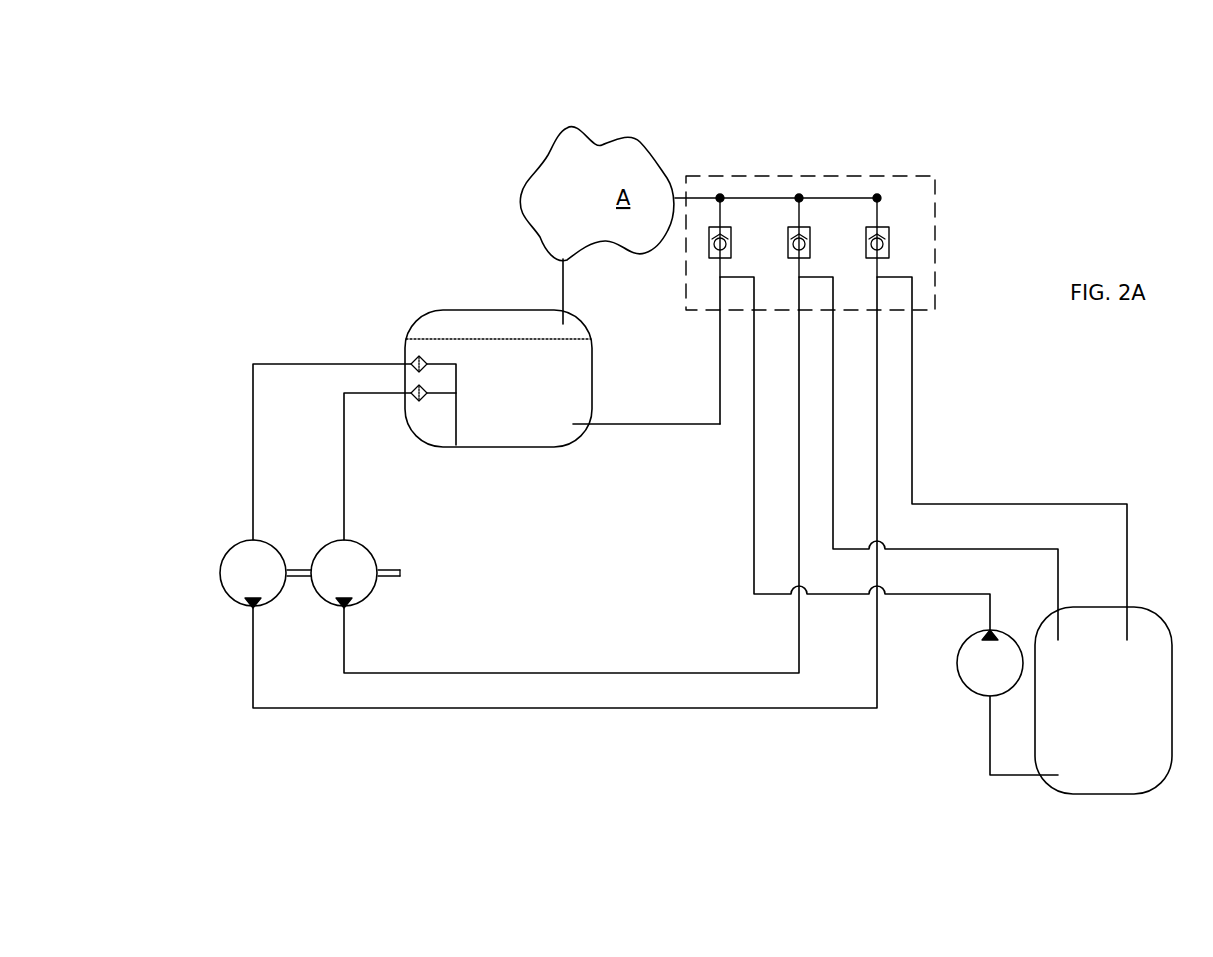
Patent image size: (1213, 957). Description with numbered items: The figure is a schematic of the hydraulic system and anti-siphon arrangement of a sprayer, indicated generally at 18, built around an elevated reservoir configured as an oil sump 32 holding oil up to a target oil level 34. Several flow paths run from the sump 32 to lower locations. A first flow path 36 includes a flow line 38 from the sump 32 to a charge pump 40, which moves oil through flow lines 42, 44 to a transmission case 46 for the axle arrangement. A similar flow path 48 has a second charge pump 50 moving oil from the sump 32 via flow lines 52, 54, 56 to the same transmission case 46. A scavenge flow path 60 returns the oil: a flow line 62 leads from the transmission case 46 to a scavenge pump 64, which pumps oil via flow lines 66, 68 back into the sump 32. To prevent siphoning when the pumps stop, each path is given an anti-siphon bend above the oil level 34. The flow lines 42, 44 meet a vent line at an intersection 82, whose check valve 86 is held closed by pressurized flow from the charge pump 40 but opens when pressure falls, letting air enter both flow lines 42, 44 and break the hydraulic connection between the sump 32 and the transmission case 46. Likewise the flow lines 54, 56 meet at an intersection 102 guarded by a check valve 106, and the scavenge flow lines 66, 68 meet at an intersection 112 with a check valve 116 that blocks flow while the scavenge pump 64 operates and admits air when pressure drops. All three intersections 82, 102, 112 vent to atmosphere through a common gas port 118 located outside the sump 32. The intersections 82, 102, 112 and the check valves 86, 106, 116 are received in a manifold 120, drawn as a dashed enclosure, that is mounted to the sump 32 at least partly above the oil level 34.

The hydraulic system 18 is at (251, 217).
The oil sump 32 is at (498, 378).
The target oil level 34 is at (497, 339).
The flow path 36 is at (360, 732).
The flow line 38 is at (316, 363).
The charge pump 40 is at (268, 545).
The flow line 42 is at (540, 709).
The flow line 44 is at (1081, 549).
The transmission case 46 is at (1103, 700).
The flow path 48 is at (499, 643).
The charge pump 50 is at (370, 595).
The flow line 52 is at (350, 450).
The flow line 54 is at (565, 672).
The flow line 56 is at (940, 548).
The flow path 60 is at (728, 472).
The flow line 62 is at (988, 752).
The scavenge pump 64 is at (960, 680).
The flow line 66 is at (754, 527).
The flow line 68 is at (687, 423).
The intersection 82 is at (905, 266).
The check valve 86 is at (889, 227).
The intersection 102 is at (824, 266).
The check valve 106 is at (810, 227).
The intersection 112 is at (744, 266).
The check valve 116 is at (731, 227).
The gas port 118 is at (681, 197).
The manifold 120 is at (935, 277).